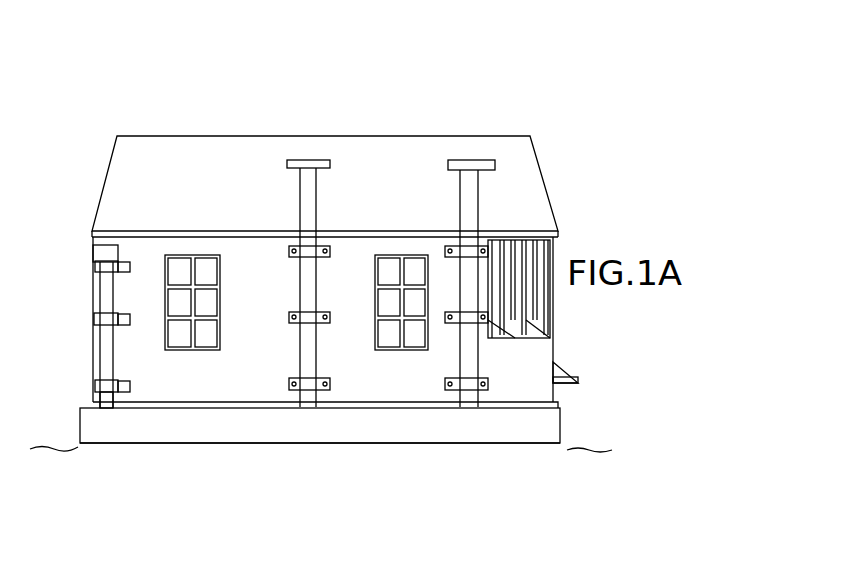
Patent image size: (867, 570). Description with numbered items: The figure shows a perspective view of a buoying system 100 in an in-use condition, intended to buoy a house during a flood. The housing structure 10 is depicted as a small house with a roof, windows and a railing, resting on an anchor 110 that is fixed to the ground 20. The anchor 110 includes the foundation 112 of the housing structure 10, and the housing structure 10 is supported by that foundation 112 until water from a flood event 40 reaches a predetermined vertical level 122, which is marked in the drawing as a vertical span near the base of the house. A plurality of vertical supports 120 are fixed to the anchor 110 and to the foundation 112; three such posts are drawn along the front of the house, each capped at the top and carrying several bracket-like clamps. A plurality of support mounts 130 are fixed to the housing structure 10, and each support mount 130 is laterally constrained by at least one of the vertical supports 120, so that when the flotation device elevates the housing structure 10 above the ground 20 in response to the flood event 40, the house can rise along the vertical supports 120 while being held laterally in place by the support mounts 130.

The housing structure 10 is at (235, 112).
The ground 20 is at (593, 450).
The flood event 40 is at (638, 58).
The buoying system 100 is at (530, 58).
The anchor 110 is at (160, 443).
The foundation 112 is at (262, 443).
The vertical supports 120 is at (97, 284).
The predetermined vertical level 122 is at (403, 430).
The support mounts 130 is at (97, 393).